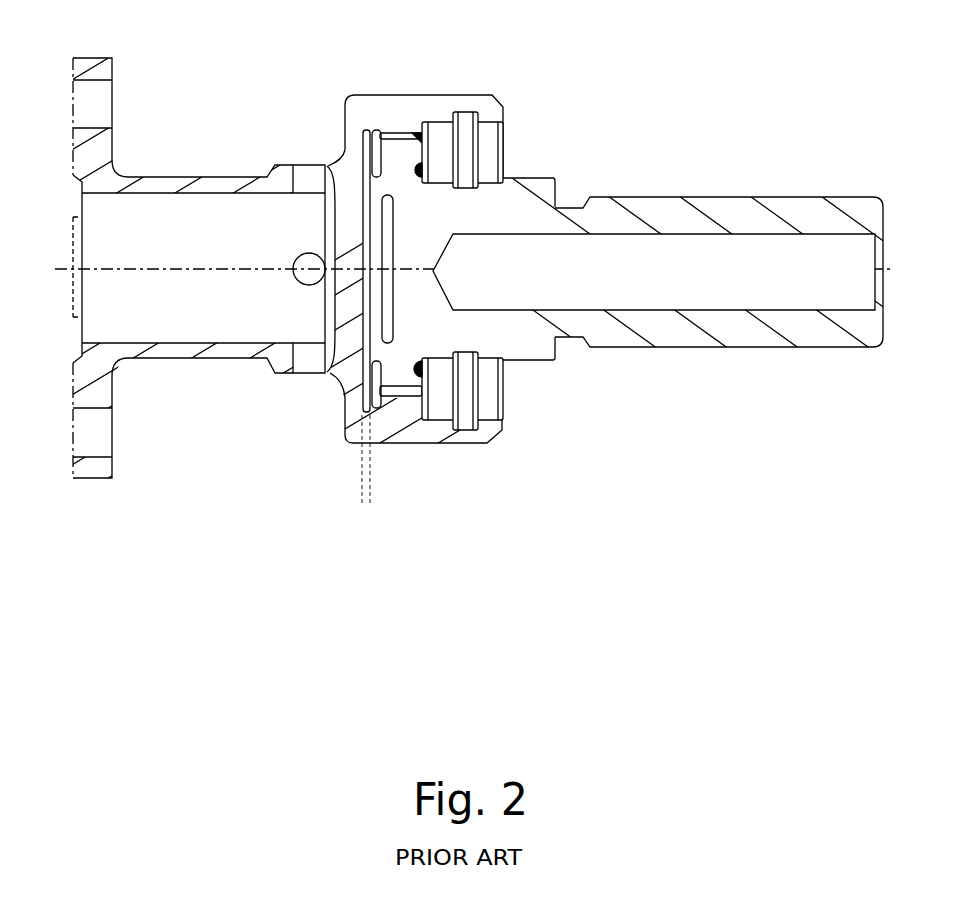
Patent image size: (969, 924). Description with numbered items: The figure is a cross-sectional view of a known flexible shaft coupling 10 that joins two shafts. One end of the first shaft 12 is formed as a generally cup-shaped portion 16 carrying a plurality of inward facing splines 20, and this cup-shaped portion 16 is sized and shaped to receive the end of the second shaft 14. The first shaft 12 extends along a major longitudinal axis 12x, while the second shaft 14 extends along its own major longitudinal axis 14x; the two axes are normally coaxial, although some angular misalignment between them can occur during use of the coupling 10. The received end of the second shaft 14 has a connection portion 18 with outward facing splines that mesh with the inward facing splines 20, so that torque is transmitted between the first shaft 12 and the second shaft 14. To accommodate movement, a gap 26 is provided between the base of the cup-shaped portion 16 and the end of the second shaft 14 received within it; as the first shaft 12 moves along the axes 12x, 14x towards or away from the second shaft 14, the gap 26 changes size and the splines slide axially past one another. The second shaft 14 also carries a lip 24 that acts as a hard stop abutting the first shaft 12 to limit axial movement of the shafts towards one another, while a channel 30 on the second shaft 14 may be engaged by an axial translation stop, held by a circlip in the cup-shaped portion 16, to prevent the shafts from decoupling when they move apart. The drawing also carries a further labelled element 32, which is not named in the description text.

The shaft coupling 10 is at (767, 50).
The first shaft 12 is at (220, 350).
The major longitudinal axis 12x is at (52, 280).
The second shaft 14 is at (640, 287).
The major longitudinal axis 14x is at (704, 269).
The cup-shaped portion 16 is at (378, 97).
The connection portion 18 is at (441, 218).
The inward facing splines 20 is at (413, 122).
The lip 24 is at (330, 368).
The gap 26 is at (397, 485).
The channel 30 is at (463, 362).
The upper seal ring 32 is at (491, 163).